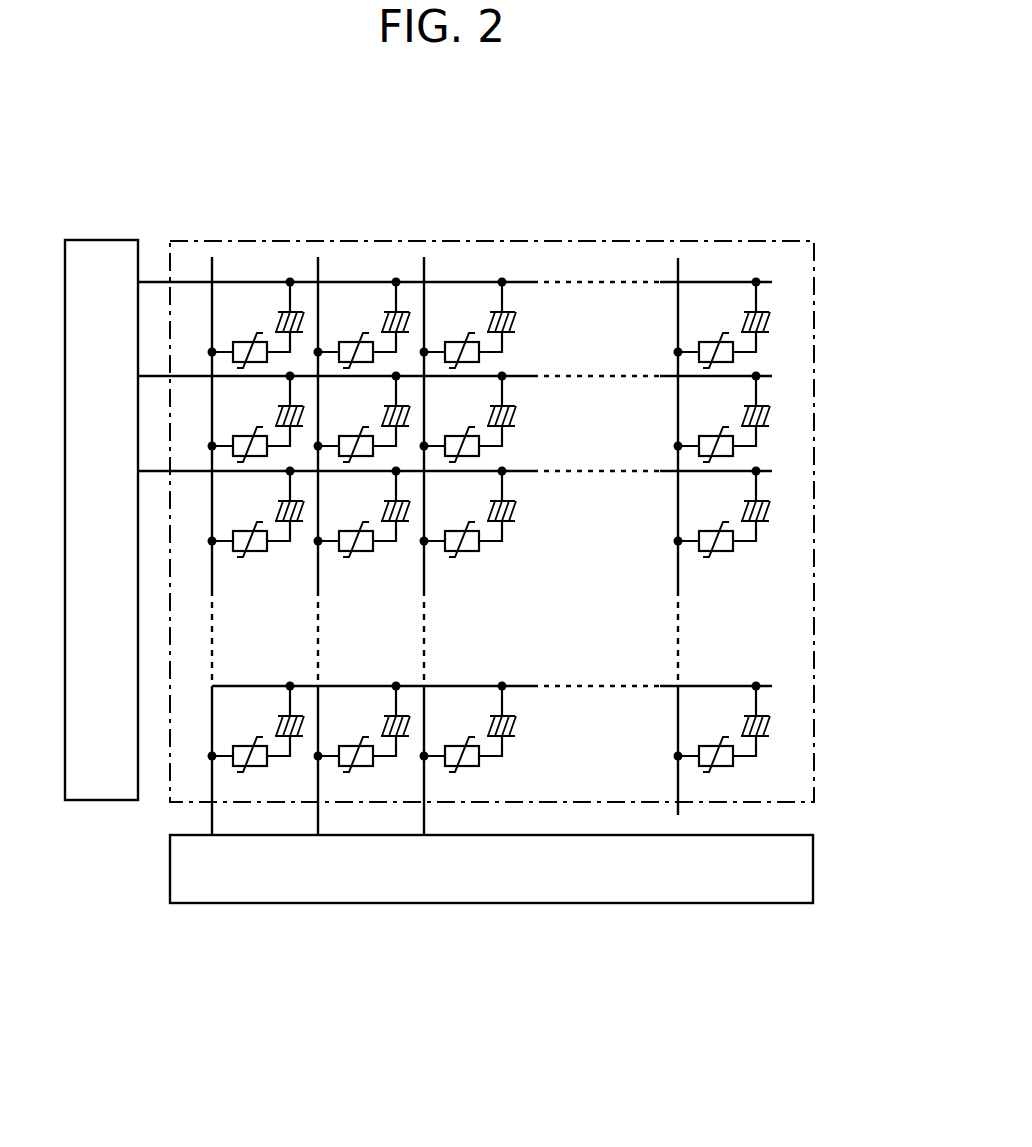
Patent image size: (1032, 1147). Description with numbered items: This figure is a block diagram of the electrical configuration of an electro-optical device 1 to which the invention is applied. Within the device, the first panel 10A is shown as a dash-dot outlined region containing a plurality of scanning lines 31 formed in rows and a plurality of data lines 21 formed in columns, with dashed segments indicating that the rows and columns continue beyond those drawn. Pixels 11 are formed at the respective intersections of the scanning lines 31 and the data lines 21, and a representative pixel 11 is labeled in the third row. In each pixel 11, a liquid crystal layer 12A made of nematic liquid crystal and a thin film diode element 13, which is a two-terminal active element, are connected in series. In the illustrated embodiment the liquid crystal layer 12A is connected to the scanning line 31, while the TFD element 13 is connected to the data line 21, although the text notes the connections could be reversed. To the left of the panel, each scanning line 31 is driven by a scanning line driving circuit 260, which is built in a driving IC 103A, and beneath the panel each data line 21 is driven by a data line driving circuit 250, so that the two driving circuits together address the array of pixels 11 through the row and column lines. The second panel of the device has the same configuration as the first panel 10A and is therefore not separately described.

The electro-optical device 1 is at (730, 168).
The first panel 10A is at (570, 250).
The pixel 11 is at (495, 561).
The liquid crystal layer 12A is at (508, 522).
The thin film diode (TFD) element 13 is at (463, 550).
The data line 21 is at (425, 788).
The scanning line 31 is at (253, 282).
The driving IC 103A is at (486, 560).
The data line driving circuit 250 is at (747, 905).
The scanning line driving circuit 260 is at (88, 240).